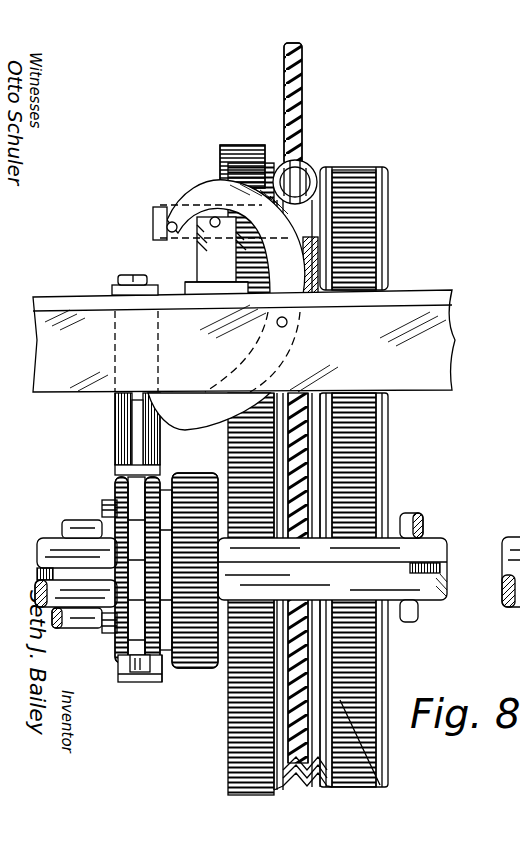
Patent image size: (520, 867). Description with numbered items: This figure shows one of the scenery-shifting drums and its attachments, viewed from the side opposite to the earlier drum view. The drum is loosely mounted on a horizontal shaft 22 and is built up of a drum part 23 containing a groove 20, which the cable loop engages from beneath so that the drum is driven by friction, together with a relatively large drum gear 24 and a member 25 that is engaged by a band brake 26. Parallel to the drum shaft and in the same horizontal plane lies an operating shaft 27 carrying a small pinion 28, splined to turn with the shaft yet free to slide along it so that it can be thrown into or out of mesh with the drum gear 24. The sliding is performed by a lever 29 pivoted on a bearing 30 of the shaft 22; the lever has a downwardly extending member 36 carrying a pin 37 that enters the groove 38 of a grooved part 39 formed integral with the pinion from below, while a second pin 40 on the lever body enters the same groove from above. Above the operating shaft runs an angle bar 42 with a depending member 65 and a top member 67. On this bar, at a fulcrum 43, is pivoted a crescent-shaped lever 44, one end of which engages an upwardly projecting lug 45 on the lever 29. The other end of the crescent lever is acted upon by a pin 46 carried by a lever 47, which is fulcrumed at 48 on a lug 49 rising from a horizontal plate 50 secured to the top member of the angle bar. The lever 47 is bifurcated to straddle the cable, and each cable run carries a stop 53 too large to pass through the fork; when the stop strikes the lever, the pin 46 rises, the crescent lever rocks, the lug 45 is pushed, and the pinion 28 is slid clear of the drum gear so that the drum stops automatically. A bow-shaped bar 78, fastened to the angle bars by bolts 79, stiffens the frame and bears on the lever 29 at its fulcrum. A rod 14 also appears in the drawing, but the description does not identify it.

The drive rod 14 is at (303, 73).
The groove 20 is at (341, 490).
The horizontal shaft 22 is at (407, 513).
The drum part 23 is at (315, 443).
The drum gear 24 is at (239, 145).
The brake member 25 is at (393, 767).
The band brake 26 is at (320, 495).
The operating shaft 27 is at (427, 543).
The pinion 28 is at (200, 670).
The lever 29 is at (160, 466).
The bearing 30 is at (113, 632).
The downwardly extending member 36 is at (153, 674).
The pin 37 is at (140, 673).
The groove 38 is at (122, 662).
The grooved part 39 is at (102, 512).
The pin 40 is at (125, 469).
The angle bar 42 is at (262, 321).
The fulcrum 43 is at (287, 324).
The crescent-shaped lever 44 is at (334, 262).
The lug 45 is at (132, 413).
The pin 46 is at (153, 224).
The lever 47 is at (163, 207).
The fulcrum 48 is at (213, 218).
The lug 49 is at (197, 257).
The horizontal plate 50 is at (213, 287).
The stop 53 is at (310, 175).
The depending member 65 is at (411, 356).
The top member 67 is at (433, 290).
The bow-shaped bar 78 is at (113, 428).
The bolt 79 is at (117, 276).